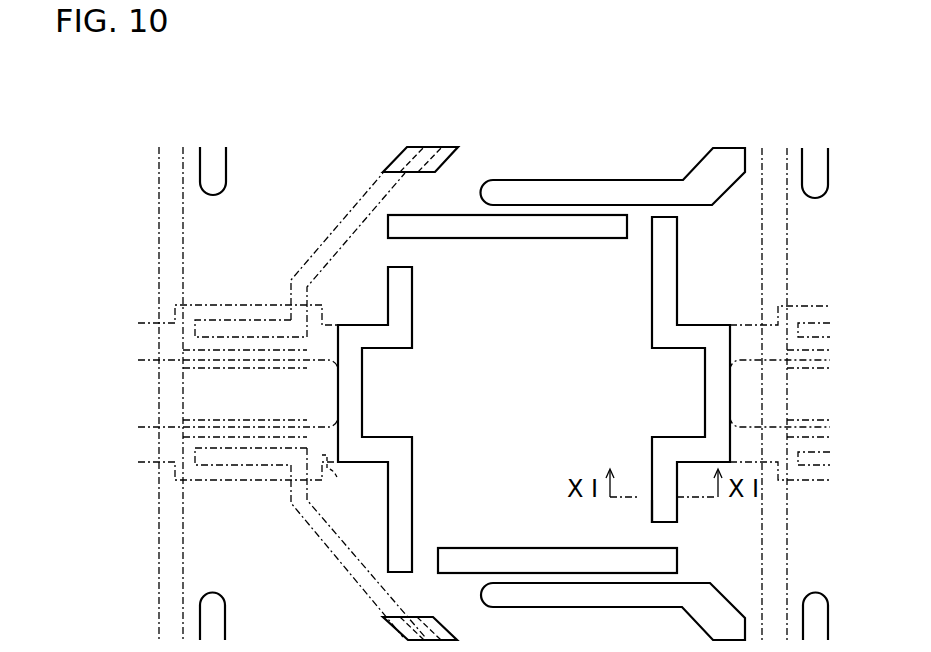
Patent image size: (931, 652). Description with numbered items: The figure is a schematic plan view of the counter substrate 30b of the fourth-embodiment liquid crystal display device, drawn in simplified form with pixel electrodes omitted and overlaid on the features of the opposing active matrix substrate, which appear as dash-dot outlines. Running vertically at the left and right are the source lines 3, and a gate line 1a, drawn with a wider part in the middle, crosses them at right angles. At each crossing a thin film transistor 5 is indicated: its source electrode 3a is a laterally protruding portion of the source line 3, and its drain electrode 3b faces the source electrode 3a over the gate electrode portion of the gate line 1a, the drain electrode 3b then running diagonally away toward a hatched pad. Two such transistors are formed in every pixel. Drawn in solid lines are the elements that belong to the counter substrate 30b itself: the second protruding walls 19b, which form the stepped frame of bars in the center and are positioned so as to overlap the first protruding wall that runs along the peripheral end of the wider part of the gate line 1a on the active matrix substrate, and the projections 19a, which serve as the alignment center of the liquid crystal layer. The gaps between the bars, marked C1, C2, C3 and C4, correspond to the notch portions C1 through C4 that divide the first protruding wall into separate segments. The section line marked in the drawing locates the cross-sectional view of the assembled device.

The counter substrate 30b is at (192, 127).
The thin film transistor 5 is at (231, 296).
The source electrode 3a is at (247, 420).
The drain electrode 3b is at (336, 553).
The source line 3 is at (167, 601).
The gate line 1a is at (339, 484).
The projection 19a is at (223, 622).
The second protruding wall 19b is at (652, 514).
The notch portion C1 is at (637, 229).
The notch portion C2 is at (664, 538).
The notch portion C3 is at (422, 570).
The notch portion C4 is at (400, 255).